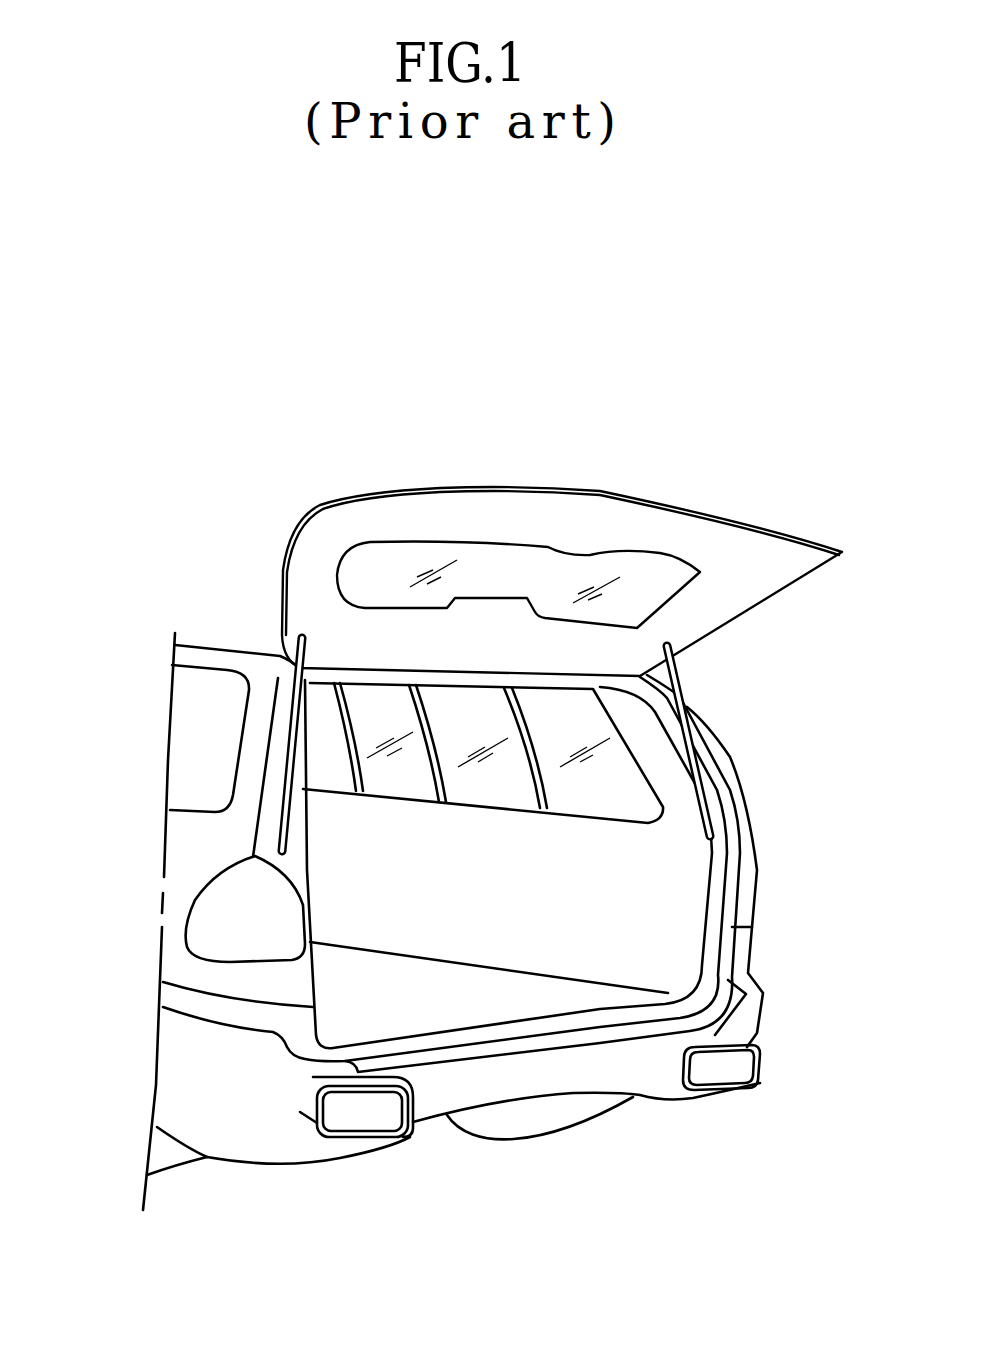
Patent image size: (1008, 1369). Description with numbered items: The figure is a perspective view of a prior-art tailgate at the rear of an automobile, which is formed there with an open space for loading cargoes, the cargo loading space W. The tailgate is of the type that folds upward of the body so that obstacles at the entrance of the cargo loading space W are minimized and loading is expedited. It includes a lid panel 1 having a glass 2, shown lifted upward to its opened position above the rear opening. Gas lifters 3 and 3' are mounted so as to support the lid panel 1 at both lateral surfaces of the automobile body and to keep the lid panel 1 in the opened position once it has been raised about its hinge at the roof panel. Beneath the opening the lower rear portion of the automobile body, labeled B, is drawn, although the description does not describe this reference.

The lid panel 1 is at (742, 547).
The glass 2 is at (635, 593).
The gas lifter 3 is at (762, 741).
The gas lifter 3' is at (177, 744).
The cargo loading space W is at (390, 990).
The bumper B is at (582, 1075).